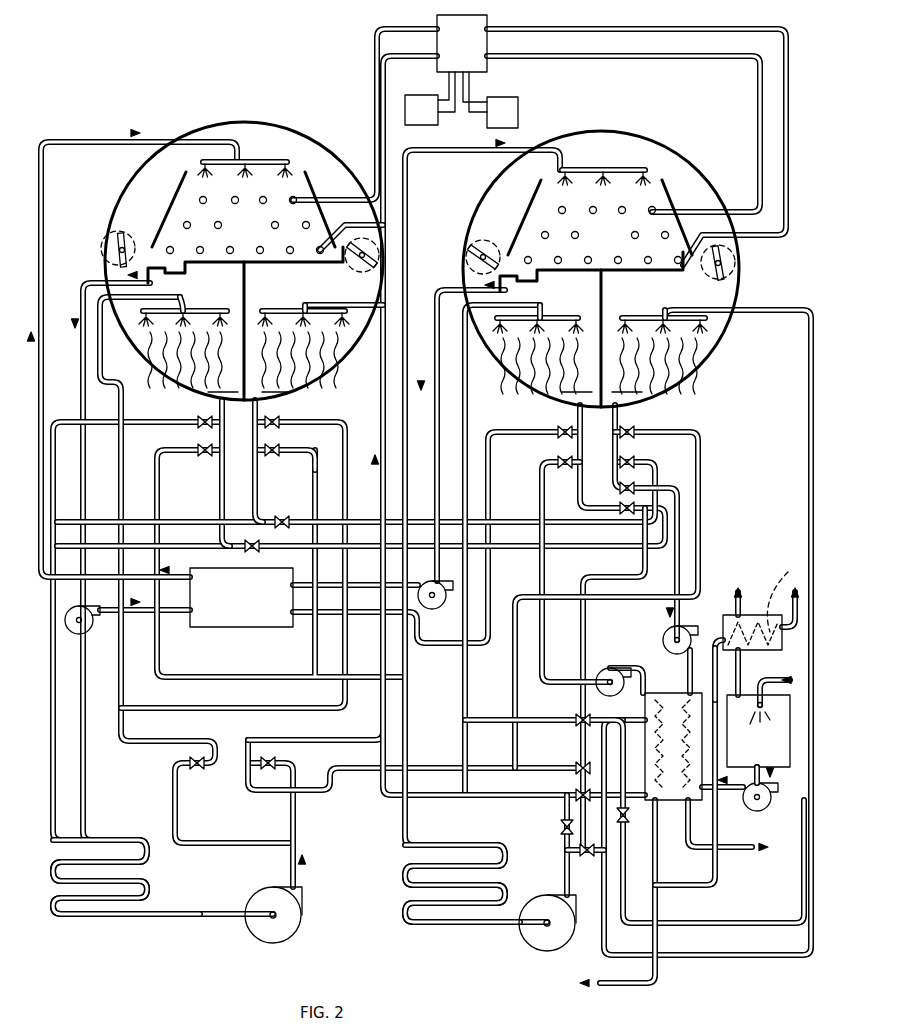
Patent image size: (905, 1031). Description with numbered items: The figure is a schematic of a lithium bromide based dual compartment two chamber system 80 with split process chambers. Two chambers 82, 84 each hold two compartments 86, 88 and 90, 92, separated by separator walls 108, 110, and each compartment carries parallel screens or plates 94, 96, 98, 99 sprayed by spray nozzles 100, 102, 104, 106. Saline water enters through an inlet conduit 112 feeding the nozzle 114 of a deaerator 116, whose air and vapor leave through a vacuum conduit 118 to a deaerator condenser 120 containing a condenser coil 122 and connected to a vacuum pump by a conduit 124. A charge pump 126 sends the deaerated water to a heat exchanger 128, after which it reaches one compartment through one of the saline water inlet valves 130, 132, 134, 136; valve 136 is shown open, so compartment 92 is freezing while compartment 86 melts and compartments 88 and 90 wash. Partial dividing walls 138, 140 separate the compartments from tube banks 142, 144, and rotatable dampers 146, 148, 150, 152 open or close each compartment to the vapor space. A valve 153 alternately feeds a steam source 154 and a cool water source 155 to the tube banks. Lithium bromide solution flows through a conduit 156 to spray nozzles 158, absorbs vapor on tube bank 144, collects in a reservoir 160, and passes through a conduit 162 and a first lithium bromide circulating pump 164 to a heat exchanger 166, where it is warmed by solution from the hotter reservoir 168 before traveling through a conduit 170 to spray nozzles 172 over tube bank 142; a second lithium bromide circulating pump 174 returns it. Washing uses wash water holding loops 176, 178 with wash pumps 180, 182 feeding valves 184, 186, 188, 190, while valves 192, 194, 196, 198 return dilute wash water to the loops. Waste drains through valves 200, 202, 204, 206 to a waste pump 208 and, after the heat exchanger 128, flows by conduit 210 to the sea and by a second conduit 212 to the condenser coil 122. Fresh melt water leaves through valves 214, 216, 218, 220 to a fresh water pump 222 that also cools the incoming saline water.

The dual compartment two chamber system 80 is at (301, 46).
The chamber 82 is at (290, 108).
The chamber 84 is at (625, 133).
The compartment 86 is at (223, 384).
The compartment 88 is at (277, 384).
The compartment 90 is at (577, 384).
The compartment 92 is at (627, 384).
The parallel screens or plates 94 is at (173, 362).
The parallel screens or plates 96 is at (318, 362).
The parallel screens or plates 98 is at (530, 366).
The parallel screens or plates 99 is at (672, 364).
The spray nozzles 100 is at (185, 308).
The spray nozzles 102 is at (296, 312).
The spray nozzles 104 is at (543, 316).
The spray nozzles 106 is at (650, 320).
The separator wall 108 is at (248, 280).
The separator wall 110 is at (605, 286).
The inlet conduit 112 is at (766, 680).
The nozzle 114 is at (758, 731).
The deaerator 116 is at (770, 772).
The vacuum conduit 118 is at (740, 682).
The deaerator condenser 120 is at (742, 618).
The condenser coil 122 is at (767, 598).
The conduit 124 is at (728, 608).
The charge pump 126 is at (753, 810).
The heat exchanger 128 is at (668, 796).
The saline water inlet valve 130 is at (543, 822).
The saline water inlet valve 132 is at (583, 761).
The saline water inlet valve 134 is at (580, 713).
The saline water inlet valve 136 is at (618, 820).
The partial dividing wall 138 is at (216, 256).
The partial dividing wall 140 is at (577, 264).
The tube bank 142 is at (200, 199).
The tube bank 144 is at (558, 209).
The rotatable damper 146 is at (110, 246).
The rotatable damper 148 is at (358, 270).
The rotatable damper 150 is at (475, 248).
The rotatable damper 152 is at (730, 266).
The valve 153 is at (472, 24).
The source 154 is at (506, 98).
The source 155 is at (425, 97).
The conduit 156 is at (466, 154).
The spray nozzles 158 is at (608, 170).
The reservoir 160 is at (535, 272).
The conduit 162 is at (444, 290).
The first lithium bromide circulating pump 164 is at (434, 611).
The heat exchanger 166 is at (244, 620).
The reservoir 168 is at (175, 264).
The conduit 170 is at (105, 141).
The spray nozzles 172 is at (250, 162).
The second lithium bromide circulating pump 174 is at (82, 636).
The wash water holding loop 176 is at (105, 838).
The wash water holding loop 178 is at (460, 845).
The wash pump 180 is at (262, 936).
The wash pump 182 is at (530, 940).
The valve 184 is at (192, 760).
The valve 186 is at (272, 760).
The valve 188 is at (566, 832).
The valve 190 is at (588, 857).
The valve 192 is at (203, 418).
The valve 194 is at (277, 418).
The valve 196 is at (562, 426).
The valve 198 is at (631, 426).
The valve 200 is at (203, 456).
The valve 202 is at (277, 456).
The valve 204 is at (561, 460).
The valve 206 is at (633, 462).
The waste pump 208 is at (608, 670).
The conduit 210 is at (658, 876).
The second conduit 212 is at (690, 886).
The valve 214 is at (248, 550).
The valve 216 is at (282, 515).
The valve 218 is at (620, 510).
The valve 220 is at (620, 490).
The fresh water pump 222 is at (664, 636).